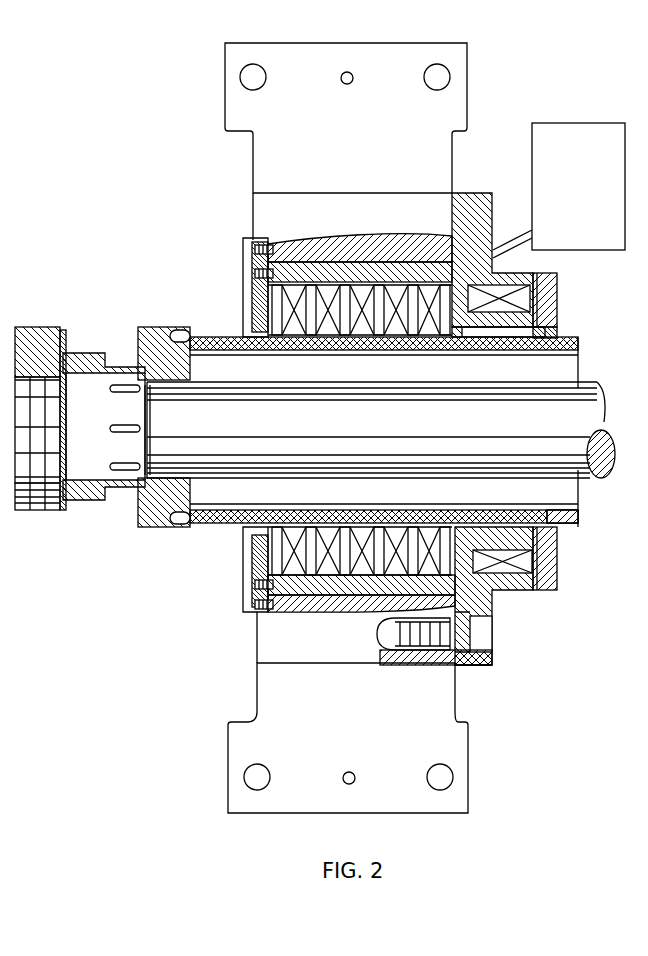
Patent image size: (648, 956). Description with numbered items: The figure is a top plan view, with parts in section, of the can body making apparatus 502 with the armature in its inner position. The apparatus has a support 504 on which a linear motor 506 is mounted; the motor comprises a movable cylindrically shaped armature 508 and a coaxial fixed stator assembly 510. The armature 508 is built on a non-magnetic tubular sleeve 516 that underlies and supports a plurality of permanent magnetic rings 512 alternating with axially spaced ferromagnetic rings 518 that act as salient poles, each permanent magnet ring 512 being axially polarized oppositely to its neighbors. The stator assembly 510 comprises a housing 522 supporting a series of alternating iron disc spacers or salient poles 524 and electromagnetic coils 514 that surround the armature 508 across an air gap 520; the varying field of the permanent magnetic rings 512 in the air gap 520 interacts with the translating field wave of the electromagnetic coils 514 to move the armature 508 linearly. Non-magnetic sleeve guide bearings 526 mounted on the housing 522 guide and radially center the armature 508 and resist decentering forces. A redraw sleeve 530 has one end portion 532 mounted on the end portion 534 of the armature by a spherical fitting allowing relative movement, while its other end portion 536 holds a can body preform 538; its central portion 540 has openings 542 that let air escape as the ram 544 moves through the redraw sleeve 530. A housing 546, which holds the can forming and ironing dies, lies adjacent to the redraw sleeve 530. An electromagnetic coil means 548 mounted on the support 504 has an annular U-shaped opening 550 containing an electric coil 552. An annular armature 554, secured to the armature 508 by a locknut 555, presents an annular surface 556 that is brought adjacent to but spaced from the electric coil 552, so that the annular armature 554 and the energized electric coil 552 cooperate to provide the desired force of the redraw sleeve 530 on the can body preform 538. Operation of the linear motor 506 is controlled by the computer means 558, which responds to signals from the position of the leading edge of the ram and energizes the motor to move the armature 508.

The can body making apparatus 502 is at (412, 139).
The support 504 is at (268, 165).
The linear motor 506 is at (301, 669).
The armature 508 is at (206, 598).
The stator assembly 510 is at (238, 582).
The permanent magnetic rings 512 is at (380, 522).
The electromagnetic coils 514 is at (316, 268).
The non-magnetic tubular sleeve 516 is at (580, 353).
The rings 518 is at (256, 530).
The air gap 520 is at (250, 335).
The housing 522 is at (252, 296).
The salient poles 524 is at (392, 275).
The sleeve guide bearings 526 is at (250, 537).
The redraw sleeve 530 is at (114, 336).
The end portion 532 is at (163, 383).
The end portion 534 is at (175, 369).
The other end portion 536 is at (96, 512).
The can body preform 538 is at (70, 513).
The central portion 540 is at (122, 350).
The openings 542 is at (125, 423).
The ram 544 is at (470, 432).
The housing 546 is at (62, 342).
The electromagnetic coil means 548 is at (471, 193).
The annular U-shaped opening 550 is at (505, 275).
The electric coil 552 is at (530, 300).
The annular armature 554 is at (557, 556).
The locknut 555 is at (578, 521).
The annular surface 556 is at (545, 322).
The computer means 558 is at (598, 172).